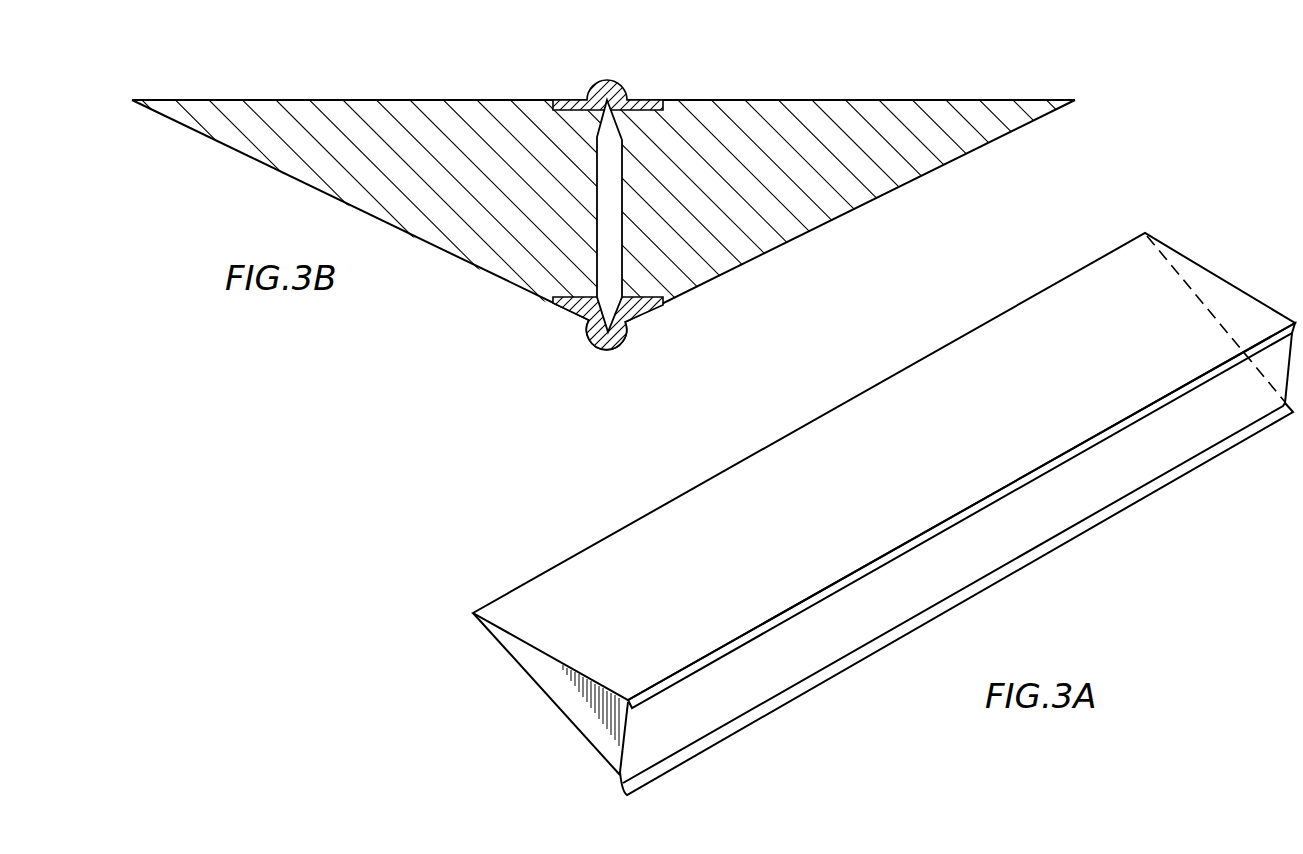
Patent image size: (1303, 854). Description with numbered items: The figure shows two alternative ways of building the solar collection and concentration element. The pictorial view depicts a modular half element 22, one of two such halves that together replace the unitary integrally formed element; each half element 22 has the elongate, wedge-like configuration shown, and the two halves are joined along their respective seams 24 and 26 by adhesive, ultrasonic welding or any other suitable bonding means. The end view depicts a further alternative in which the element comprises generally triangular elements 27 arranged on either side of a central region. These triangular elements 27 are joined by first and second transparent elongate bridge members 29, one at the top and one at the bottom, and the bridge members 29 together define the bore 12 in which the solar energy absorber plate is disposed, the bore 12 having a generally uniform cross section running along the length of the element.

In FIG. 3B, the elongate bore 12 is at (608, 150).
In FIG. 3A, the half element 22 is at (636, 532).
In FIG. 3A, the seam 24 is at (700, 658).
In FIG. 3A, the seam 26 is at (723, 740).
In FIG. 3B, the generally triangular element 27 is at (380, 127).
In FIG. 3B, the transparent elongate bridge member 29 is at (608, 100).